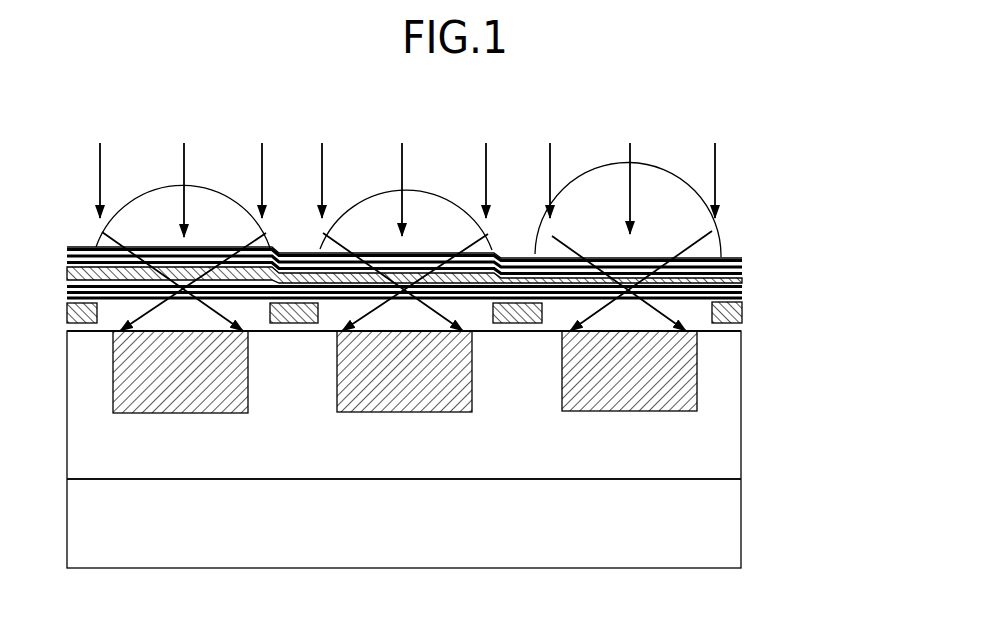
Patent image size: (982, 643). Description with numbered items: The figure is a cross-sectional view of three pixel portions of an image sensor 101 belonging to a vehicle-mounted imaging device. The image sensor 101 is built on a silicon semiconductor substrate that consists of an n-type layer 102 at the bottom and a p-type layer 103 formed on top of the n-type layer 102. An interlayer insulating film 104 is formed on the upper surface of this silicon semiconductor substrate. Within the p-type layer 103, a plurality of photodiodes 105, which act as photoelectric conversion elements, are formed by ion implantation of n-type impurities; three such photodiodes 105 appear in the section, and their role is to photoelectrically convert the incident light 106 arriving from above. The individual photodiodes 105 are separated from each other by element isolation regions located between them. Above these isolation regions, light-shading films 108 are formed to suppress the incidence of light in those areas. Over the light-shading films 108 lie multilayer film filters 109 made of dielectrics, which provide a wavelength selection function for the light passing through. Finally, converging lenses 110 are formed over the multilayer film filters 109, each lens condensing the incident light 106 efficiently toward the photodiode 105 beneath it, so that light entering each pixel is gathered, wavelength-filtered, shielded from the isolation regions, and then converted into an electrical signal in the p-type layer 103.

The image sensor 101 is at (452, 100).
The n-type layer 102 is at (739, 524).
The p-type layer 103 is at (739, 424).
The interlayer insulating film 104 is at (700, 312).
The photodiode 105 is at (315, 590).
The incident light 106 is at (630, 154).
The light-shading film 108 is at (743, 311).
The multilayer film filter 109 is at (746, 274).
The converging lens 110 is at (722, 238).